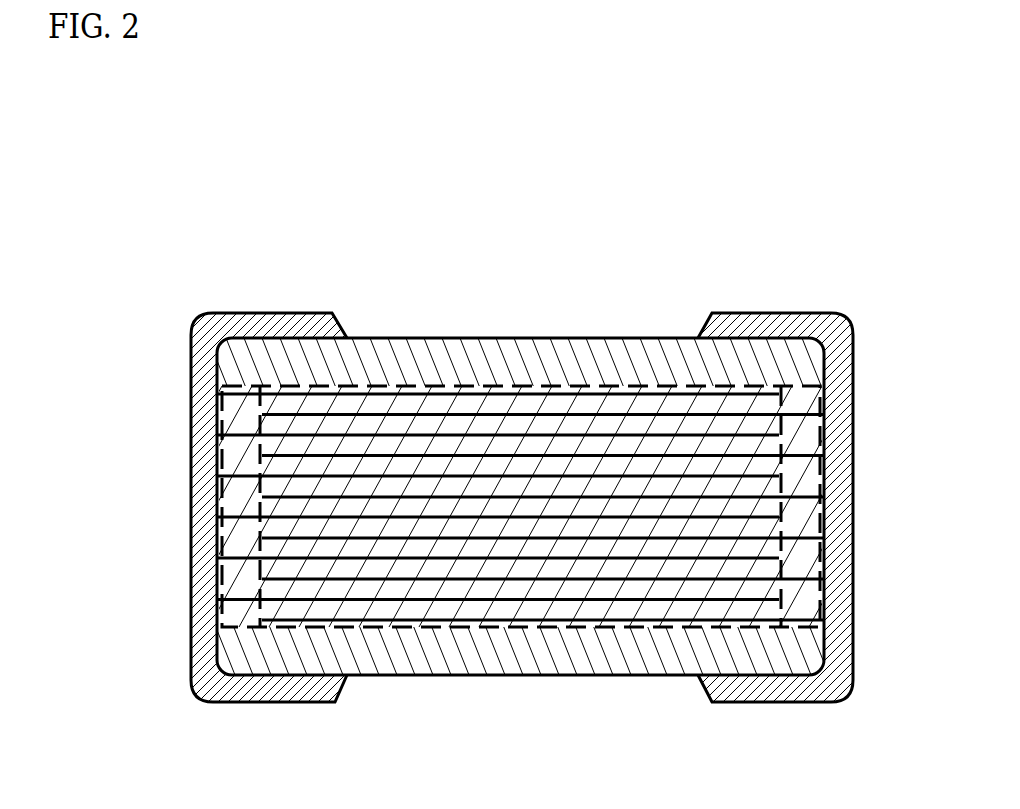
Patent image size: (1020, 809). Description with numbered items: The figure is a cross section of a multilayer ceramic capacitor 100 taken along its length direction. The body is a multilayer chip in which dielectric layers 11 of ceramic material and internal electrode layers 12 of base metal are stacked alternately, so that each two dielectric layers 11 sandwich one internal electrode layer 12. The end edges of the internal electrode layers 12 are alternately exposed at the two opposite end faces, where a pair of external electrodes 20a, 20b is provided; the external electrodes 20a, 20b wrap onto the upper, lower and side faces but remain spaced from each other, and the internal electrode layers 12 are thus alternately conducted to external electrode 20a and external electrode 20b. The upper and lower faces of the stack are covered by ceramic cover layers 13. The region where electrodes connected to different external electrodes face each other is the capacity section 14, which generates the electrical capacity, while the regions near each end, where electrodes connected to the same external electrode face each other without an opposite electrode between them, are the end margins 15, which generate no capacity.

The multilayer ceramic capacitor 100 is at (510, 451).
The dielectric layer 11 is at (655, 588).
The internal electrode layer 12 is at (463, 558).
The cover layer 13 is at (415, 352).
The capacity section 14 is at (547, 385).
The end margin 15 is at (244, 385).
The external electrode 20a is at (218, 313).
The external electrode 20b is at (815, 313).